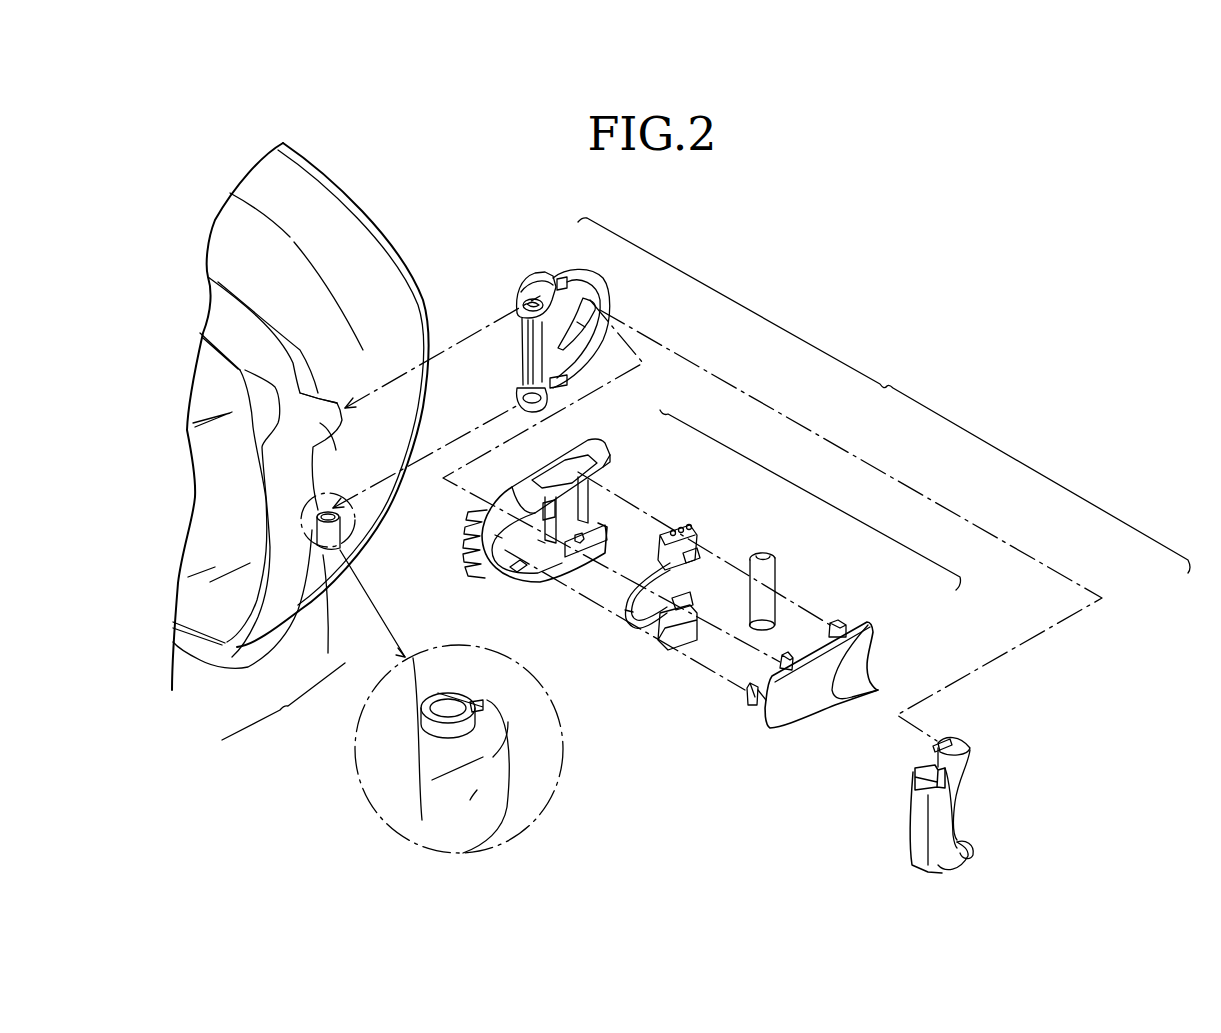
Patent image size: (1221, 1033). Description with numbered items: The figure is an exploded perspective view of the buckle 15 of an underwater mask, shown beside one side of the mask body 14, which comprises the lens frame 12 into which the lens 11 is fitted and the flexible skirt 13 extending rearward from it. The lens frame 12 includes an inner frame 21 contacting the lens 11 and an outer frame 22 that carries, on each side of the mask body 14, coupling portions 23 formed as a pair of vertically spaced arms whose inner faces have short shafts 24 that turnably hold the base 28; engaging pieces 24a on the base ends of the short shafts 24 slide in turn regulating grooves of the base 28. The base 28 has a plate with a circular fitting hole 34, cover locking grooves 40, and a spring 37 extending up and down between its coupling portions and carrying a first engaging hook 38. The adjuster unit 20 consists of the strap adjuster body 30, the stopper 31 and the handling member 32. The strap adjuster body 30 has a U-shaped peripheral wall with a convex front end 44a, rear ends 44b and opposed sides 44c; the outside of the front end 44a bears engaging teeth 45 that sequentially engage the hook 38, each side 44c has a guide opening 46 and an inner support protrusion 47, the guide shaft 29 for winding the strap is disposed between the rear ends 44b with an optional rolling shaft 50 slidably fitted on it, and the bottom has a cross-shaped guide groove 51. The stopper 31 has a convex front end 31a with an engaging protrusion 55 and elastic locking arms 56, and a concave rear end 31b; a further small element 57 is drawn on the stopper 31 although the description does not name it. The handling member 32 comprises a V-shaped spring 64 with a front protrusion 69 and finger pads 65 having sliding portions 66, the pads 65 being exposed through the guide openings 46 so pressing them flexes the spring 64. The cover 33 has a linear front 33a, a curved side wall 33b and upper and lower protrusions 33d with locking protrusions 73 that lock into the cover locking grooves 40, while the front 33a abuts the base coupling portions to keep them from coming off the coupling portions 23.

The lens 11 is at (207, 620).
The lens frame 12 is at (265, 623).
The skirt 13 is at (325, 633).
The mask body 14 is at (283, 701).
The buckle 15 is at (761, 479).
The adjuster unit 20 is at (822, 498).
The inner frame 21 is at (287, 540).
The outer frame 22 is at (252, 337).
The coupling portions 23 is at (323, 428).
The short shafts 24 is at (342, 430).
The engaging pieces 24a is at (478, 700).
The base 28 is at (573, 253).
The guide shaft 29 is at (592, 490).
The strap adjuster body 30 is at (648, 450).
The stopper 31 is at (909, 606).
The front end 31a is at (758, 727).
The rear end 31b is at (877, 660).
The handling member 32 is at (720, 521).
The cover 33 is at (999, 787).
The front 33a is at (913, 830).
The side wall 33b is at (957, 812).
The upper and lower protrusions 33d is at (968, 755).
The fitting hole 34 is at (523, 303).
The spring 37 is at (532, 343).
The first engaging hook 38 is at (576, 350).
The cover locking grooves 40 is at (530, 276).
The front end 44a is at (487, 570).
The rear ends 44b is at (610, 462).
The sides 44c is at (515, 480).
The engaging teeth 45 is at (465, 555).
The guide opening 46 is at (568, 460).
The support protrusion 47 is at (587, 540).
The rolling shaft 50 is at (794, 574).
The guide groove 51 is at (515, 505).
The engaging protrusion 55 is at (746, 708).
The elastic locking arms 56 is at (781, 655).
The cover hook 57 is at (838, 618).
The spring 64 is at (640, 630).
The finger pads 65 is at (678, 528).
The sliding portions 66 is at (697, 558).
The protrusion 69 is at (623, 618).
The locking protrusion 73 is at (942, 740).